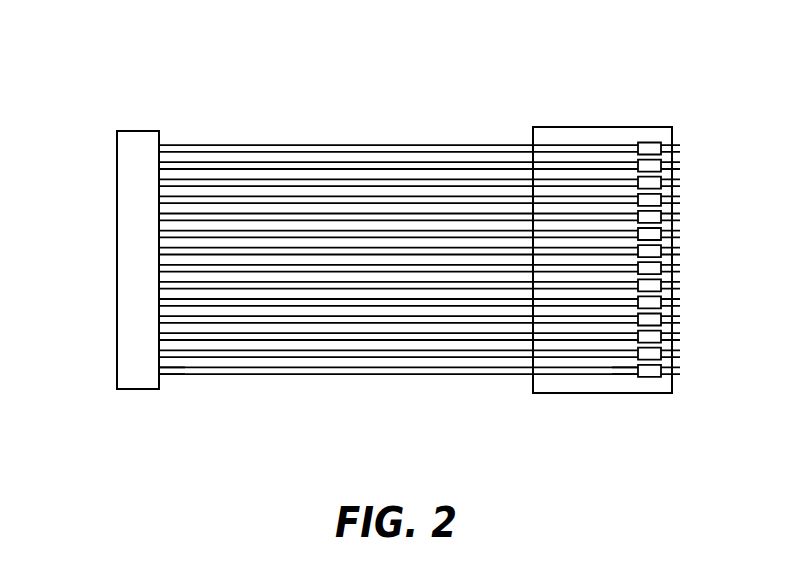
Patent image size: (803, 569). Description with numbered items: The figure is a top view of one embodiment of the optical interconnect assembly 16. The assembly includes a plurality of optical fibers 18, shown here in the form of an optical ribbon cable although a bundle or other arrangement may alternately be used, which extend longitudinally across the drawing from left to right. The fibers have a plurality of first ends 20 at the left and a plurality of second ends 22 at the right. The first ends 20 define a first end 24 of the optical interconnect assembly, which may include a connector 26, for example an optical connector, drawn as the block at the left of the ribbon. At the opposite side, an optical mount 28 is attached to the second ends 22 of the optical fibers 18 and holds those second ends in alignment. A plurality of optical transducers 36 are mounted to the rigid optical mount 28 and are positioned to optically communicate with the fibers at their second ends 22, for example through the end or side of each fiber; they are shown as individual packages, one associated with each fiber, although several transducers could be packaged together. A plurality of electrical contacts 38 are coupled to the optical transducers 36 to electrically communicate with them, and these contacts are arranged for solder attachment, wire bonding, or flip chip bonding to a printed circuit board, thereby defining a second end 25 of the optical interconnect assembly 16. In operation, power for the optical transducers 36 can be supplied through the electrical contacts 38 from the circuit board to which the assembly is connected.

The optical interconnect assembly 16 is at (148, 62).
The optical fibers 18 is at (312, 163).
The first ends 20 is at (168, 373).
The second ends 22 is at (636, 373).
The first end of the optical interconnect assembly 24 is at (103, 257).
The second end of the optical interconnect assembly 25 is at (695, 255).
The connector 26 is at (128, 373).
The optical mount 28 is at (553, 385).
The optical transducers 36 is at (648, 147).
The electrical contacts 38 is at (677, 145).